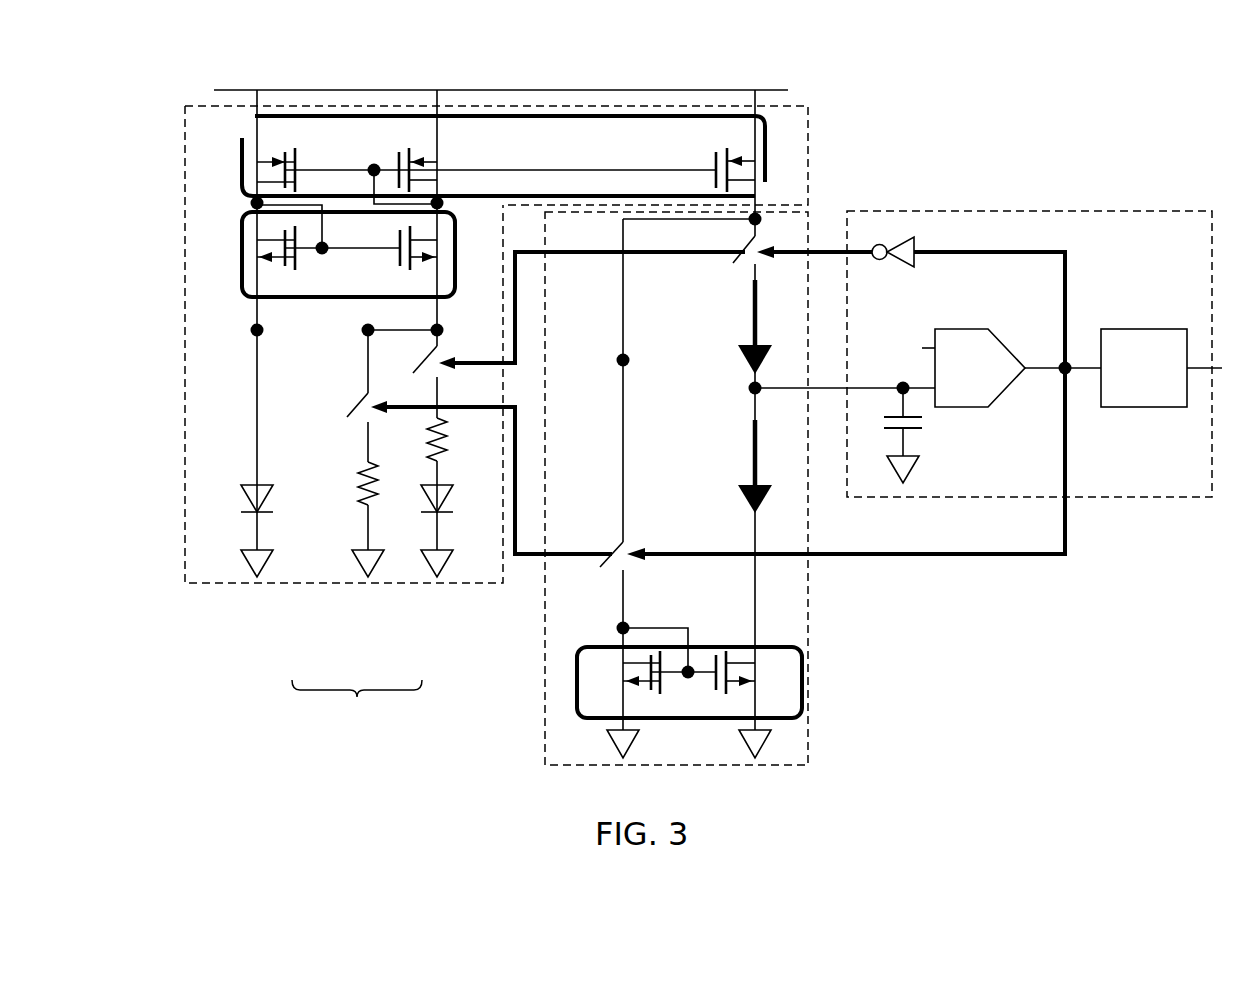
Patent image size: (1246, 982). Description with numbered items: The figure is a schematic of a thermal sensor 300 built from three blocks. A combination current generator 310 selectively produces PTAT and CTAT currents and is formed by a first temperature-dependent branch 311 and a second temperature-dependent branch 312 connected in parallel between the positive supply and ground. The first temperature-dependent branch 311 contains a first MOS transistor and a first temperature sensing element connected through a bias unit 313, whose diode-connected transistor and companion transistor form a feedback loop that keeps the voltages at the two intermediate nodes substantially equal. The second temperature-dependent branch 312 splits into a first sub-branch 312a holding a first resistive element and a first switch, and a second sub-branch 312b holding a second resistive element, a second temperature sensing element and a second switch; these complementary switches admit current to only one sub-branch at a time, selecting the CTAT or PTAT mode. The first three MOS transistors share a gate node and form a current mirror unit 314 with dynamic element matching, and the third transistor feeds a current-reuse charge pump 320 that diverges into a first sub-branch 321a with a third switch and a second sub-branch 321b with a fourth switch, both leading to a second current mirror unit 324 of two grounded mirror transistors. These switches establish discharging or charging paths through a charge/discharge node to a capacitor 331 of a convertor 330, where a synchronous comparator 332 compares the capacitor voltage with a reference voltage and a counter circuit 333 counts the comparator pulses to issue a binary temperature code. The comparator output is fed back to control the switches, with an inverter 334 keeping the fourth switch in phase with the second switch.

The thermal sensor 300 is at (128, 62).
The combination current generator 310 is at (463, 106).
The first temperature-dependent branch 311 is at (249, 465).
The second temperature-dependent branch 312 is at (357, 706).
The first sub-branch 312a is at (355, 533).
The second sub-branch 312b is at (425, 533).
The bias unit 313 is at (242, 253).
The current mirror unit 314 is at (240, 160).
The current-reuse charge pump 320 is at (808, 230).
The first sub-branch 321a is at (600, 602).
The second sub-branch 321b is at (767, 577).
The second current mirror unit 324 is at (802, 682).
The convertor 330 is at (1075, 211).
The capacitor 331 is at (928, 423).
The synchronous comparator 332 is at (978, 368).
The counter circuit 333 is at (1161, 368).
The inverter 334 is at (894, 265).